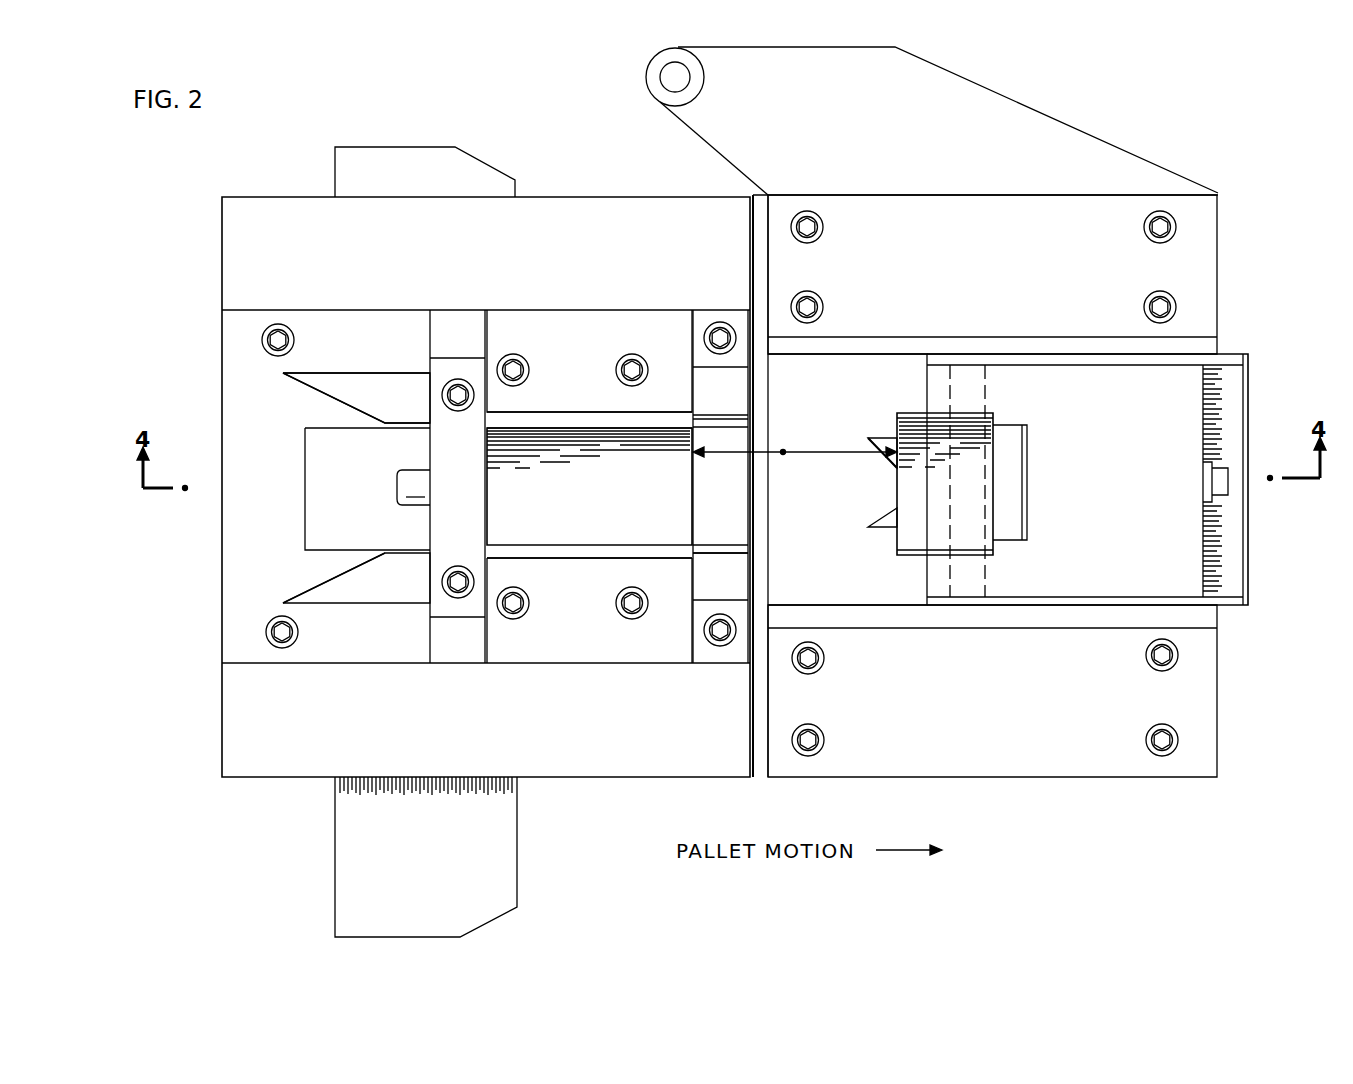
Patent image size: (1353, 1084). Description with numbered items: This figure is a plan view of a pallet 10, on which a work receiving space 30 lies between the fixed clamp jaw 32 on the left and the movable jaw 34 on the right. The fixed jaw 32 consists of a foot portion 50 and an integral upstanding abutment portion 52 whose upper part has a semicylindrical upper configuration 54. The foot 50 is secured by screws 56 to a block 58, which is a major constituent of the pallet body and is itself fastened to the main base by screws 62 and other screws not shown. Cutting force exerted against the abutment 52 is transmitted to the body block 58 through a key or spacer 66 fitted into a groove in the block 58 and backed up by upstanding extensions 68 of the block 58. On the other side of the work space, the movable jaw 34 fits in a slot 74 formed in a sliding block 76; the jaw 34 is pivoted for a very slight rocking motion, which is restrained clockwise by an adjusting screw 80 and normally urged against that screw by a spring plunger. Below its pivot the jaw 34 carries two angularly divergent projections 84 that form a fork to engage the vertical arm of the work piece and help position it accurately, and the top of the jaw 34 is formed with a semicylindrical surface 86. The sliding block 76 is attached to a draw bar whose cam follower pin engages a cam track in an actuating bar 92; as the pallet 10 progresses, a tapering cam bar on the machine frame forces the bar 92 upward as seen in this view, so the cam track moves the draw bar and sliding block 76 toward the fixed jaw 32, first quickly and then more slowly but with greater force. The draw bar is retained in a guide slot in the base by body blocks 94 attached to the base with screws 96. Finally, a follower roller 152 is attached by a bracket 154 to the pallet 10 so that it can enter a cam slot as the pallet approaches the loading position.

The pallet 10 is at (277, 186).
The work receiving space 30 is at (783, 450).
The fixed clamp jaw 32 is at (693, 493).
The movable jaw 34 is at (897, 430).
The foot portion 50 is at (588, 360).
The abutment portion 52 is at (530, 412).
The semicylindrical upper configuration 54 is at (599, 531).
The screws 56 is at (509, 355).
The block 58 is at (503, 266).
The screws 62 is at (262, 340).
The key or spacer 66 is at (468, 528).
The upstanding extensions 68 is at (394, 552).
The slot 74 is at (1020, 456).
The sliding block 76 is at (1119, 537).
The adjusting screw 80 is at (1216, 492).
The angularly divergent projections 84 is at (885, 512).
The semicylindrical surface 86 is at (930, 524).
The actuating bar 92 is at (335, 830).
The body blocks 94 is at (994, 276).
The screws 96 is at (818, 292).
The follower roller 152 is at (705, 83).
The bracket 154 is at (1062, 120).